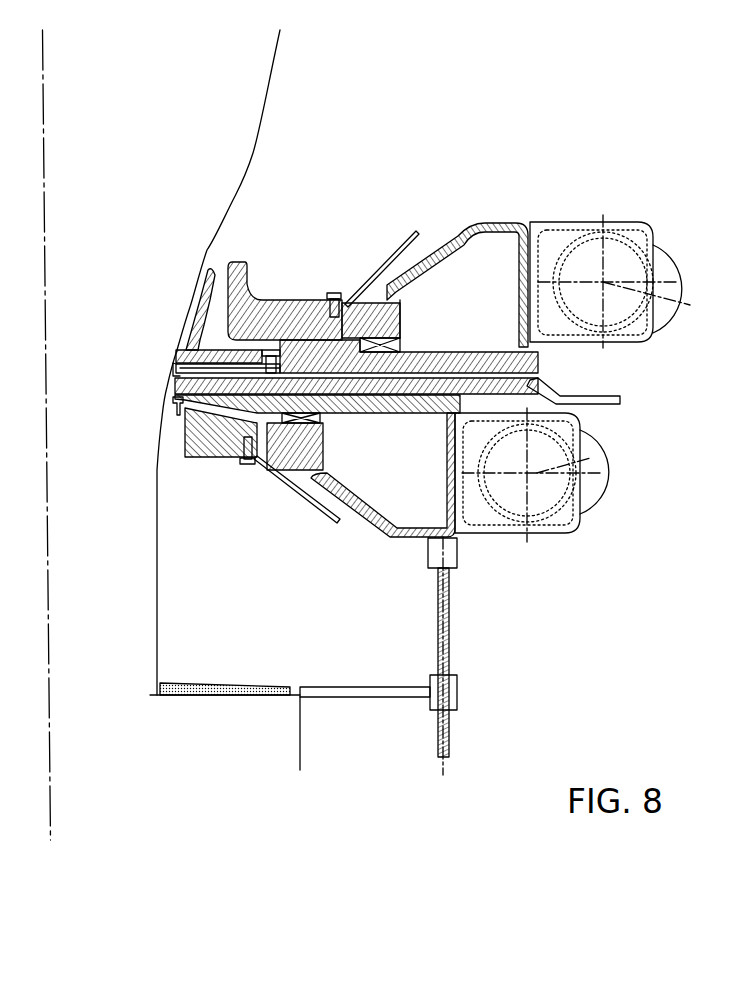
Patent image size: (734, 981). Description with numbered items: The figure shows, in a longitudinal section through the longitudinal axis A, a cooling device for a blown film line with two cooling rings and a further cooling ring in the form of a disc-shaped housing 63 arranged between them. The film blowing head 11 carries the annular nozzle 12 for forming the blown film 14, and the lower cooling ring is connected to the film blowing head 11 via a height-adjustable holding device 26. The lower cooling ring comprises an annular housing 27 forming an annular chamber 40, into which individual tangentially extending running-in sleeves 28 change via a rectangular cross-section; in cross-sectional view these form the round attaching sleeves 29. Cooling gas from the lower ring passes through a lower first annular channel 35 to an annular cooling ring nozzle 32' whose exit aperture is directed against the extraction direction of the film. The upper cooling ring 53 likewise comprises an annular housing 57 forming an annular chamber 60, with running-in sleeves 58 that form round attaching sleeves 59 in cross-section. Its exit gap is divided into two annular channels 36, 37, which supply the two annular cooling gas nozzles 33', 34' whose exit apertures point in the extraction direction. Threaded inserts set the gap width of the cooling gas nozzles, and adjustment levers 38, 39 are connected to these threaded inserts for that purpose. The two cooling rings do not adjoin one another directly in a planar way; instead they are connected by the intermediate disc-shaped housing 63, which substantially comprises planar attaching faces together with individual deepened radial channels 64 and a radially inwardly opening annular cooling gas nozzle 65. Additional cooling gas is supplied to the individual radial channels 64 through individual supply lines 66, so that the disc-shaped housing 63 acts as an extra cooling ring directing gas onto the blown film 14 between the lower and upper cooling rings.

The longitudinal axis A is at (43, 90).
The film blowing head 11 is at (301, 722).
The annular nozzle 12 is at (160, 718).
The blown film 14 is at (264, 108).
The height-adjustable holding device 26 is at (453, 693).
The annular housing 27 is at (393, 537).
The running-in sleeves 28 is at (512, 533).
The attaching sleeves 29 is at (600, 490).
The annular cooling ring nozzle 32' is at (187, 471).
The annular cooling gas nozzle 33' is at (200, 321).
The annular cooling gas nozzle 34' is at (196, 284).
The lower first annular channel 35 is at (248, 422).
The annular channel 36 is at (268, 348).
The annular channel 37 is at (313, 340).
The adjustment lever 38 is at (293, 493).
The adjustment lever 39 is at (385, 252).
The annular chamber 40 is at (408, 472).
The cooling ring 53 is at (523, 170).
The annular housing 57 is at (462, 222).
The running-in sleeves 58 is at (568, 232).
The attaching sleeves 59 is at (675, 245).
The annular chamber 60 is at (480, 312).
The disc-shaped housing 63 is at (497, 387).
The radial channels 64 is at (176, 399).
The annular cooling gas nozzle 65 is at (172, 377).
The supply lines 66 is at (610, 400).